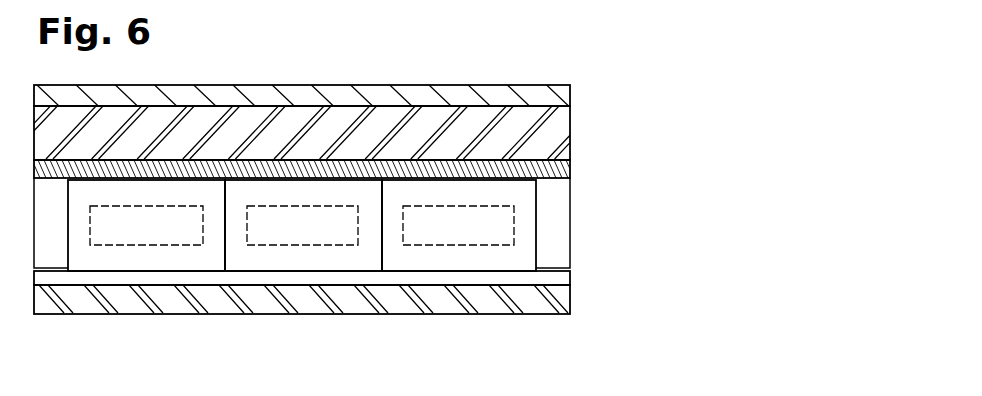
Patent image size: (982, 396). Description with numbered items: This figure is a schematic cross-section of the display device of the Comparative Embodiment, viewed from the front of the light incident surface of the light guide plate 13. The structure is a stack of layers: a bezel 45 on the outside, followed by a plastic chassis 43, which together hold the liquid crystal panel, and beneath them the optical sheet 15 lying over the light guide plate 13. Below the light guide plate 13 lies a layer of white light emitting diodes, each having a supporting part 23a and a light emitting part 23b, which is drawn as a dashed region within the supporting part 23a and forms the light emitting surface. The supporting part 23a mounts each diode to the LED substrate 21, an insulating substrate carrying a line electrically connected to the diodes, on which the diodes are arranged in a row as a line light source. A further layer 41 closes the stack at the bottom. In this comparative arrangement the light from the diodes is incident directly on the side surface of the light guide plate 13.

The bezel 45 is at (560, 95).
The plastic chassis 43 is at (566, 135).
The optical sheet 15 is at (566, 169).
The light guide plate 13 is at (346, 226).
The supporting part 23a is at (524, 212).
The light emitting part 23b is at (507, 238).
The LED substrate 21 is at (563, 278).
The back sheet 41 is at (565, 303).